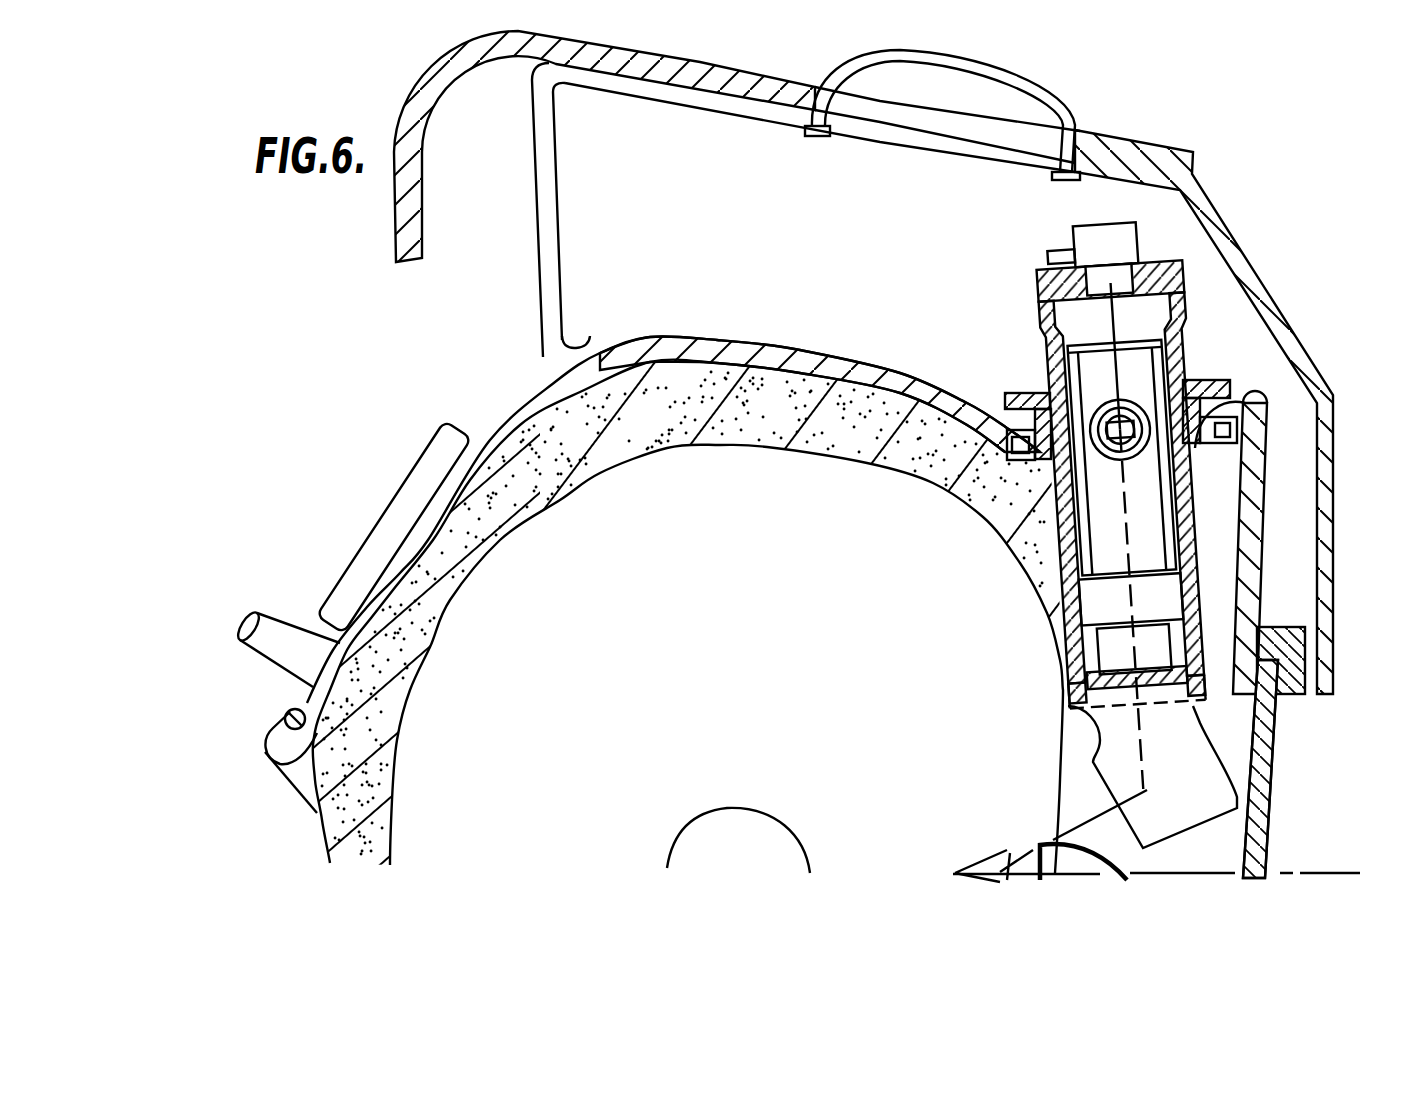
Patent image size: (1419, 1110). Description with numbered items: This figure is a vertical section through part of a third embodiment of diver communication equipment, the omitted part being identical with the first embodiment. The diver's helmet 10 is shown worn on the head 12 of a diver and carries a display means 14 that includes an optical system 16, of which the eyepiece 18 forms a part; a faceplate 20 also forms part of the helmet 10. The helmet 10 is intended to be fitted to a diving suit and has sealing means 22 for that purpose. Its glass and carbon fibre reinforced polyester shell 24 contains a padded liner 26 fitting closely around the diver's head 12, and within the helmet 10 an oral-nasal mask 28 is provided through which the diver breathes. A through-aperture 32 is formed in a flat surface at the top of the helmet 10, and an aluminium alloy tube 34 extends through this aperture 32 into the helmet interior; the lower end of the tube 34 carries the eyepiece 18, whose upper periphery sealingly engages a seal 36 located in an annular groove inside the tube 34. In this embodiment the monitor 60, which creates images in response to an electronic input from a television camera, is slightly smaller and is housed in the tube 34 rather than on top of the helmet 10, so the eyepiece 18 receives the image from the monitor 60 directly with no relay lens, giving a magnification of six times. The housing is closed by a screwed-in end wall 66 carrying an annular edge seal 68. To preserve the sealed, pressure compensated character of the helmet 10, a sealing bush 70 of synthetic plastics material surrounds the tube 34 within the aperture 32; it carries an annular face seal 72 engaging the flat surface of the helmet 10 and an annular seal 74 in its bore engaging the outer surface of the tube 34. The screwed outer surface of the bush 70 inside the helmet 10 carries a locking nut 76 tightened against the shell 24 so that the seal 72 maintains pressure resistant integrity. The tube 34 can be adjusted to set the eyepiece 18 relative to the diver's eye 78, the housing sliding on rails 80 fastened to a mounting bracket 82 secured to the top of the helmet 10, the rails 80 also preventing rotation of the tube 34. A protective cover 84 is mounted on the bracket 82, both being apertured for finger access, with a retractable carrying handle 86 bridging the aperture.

The diver's helmet 10 is at (515, 386).
The head of a diver 12 is at (763, 708).
The display means 14 is at (1197, 360).
The optical system 16 is at (1108, 607).
The eyepiece 18 is at (1210, 825).
The faceplate 20 is at (1262, 760).
The sealing means 22 is at (286, 711).
The shell 24 is at (736, 352).
The padded liner 26 is at (817, 410).
The oral-nasal mask 28 is at (1080, 845).
The through-aperture 32 is at (1033, 393).
The aluminium alloy tube 34 is at (1200, 608).
The seal 36 is at (1062, 686).
The monitor 60 is at (1103, 523).
The end wall 66 is at (1062, 270).
The annular edge seal 68 is at (1153, 270).
The sealing bush 70 is at (1245, 458).
The annular face seal 72 is at (1257, 405).
The annular seal 74 is at (1187, 372).
The locking nut 76 is at (1190, 430).
The diver's eye 78 is at (990, 865).
The rails 80 is at (533, 131).
The mounting bracket 82 is at (742, 108).
The protective cover 84 is at (607, 60).
The carrying handle 86 is at (869, 60).